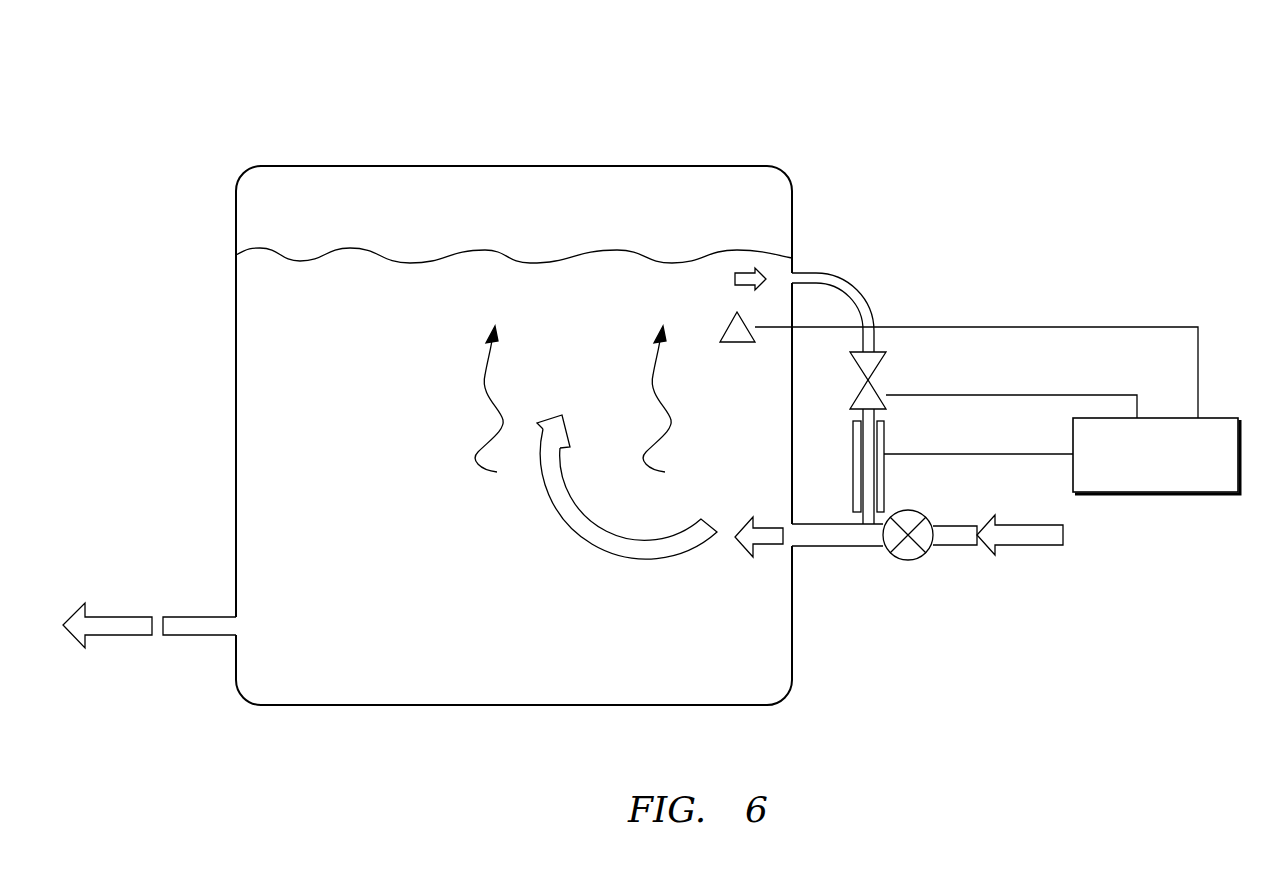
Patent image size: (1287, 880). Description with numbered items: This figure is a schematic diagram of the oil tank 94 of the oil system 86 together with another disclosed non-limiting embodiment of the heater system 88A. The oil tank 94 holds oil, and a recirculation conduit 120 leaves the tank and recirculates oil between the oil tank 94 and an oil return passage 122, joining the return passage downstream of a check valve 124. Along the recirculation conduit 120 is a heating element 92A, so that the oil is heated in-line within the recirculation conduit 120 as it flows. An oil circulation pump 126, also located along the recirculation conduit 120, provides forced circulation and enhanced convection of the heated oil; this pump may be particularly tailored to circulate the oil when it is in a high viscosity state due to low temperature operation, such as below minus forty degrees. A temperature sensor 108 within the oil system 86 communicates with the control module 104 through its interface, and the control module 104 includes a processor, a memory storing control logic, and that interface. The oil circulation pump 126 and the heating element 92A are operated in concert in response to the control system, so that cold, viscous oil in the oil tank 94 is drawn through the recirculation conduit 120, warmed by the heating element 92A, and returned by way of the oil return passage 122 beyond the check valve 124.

The oil system 86 is at (614, 128).
The oil tank 94 is at (720, 167).
The heater system 88A is at (1013, 199).
The temperature sensor 108 is at (728, 325).
The recirculation conduit 120 is at (845, 275).
The oil circulation pump 126 is at (878, 366).
The heating element 92A is at (852, 453).
The oil return passage 122 is at (825, 548).
The check valve 124 is at (905, 561).
The control module 104 is at (1182, 473).